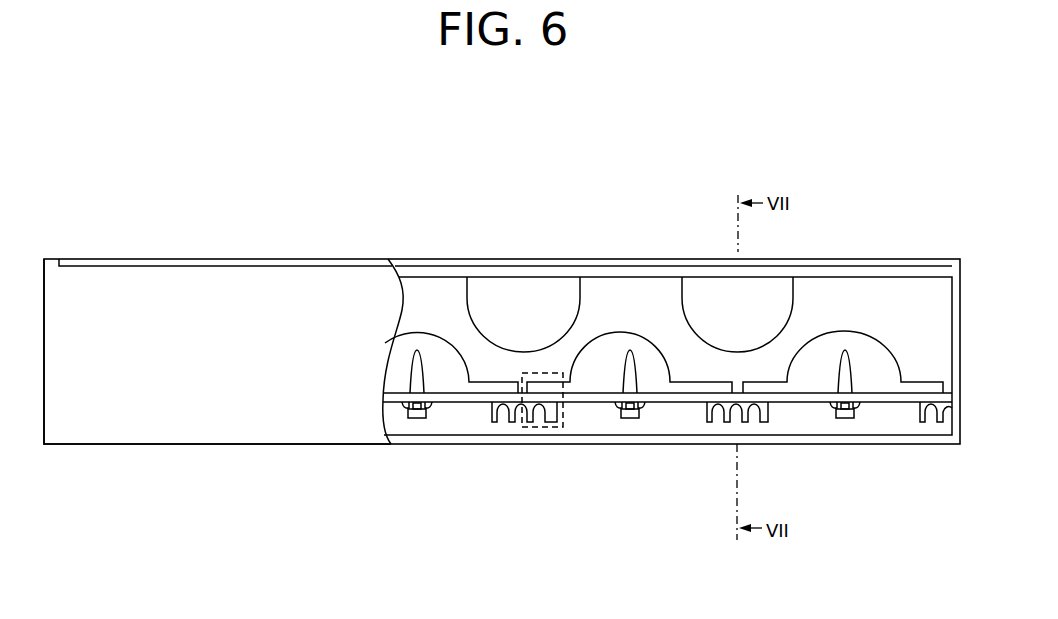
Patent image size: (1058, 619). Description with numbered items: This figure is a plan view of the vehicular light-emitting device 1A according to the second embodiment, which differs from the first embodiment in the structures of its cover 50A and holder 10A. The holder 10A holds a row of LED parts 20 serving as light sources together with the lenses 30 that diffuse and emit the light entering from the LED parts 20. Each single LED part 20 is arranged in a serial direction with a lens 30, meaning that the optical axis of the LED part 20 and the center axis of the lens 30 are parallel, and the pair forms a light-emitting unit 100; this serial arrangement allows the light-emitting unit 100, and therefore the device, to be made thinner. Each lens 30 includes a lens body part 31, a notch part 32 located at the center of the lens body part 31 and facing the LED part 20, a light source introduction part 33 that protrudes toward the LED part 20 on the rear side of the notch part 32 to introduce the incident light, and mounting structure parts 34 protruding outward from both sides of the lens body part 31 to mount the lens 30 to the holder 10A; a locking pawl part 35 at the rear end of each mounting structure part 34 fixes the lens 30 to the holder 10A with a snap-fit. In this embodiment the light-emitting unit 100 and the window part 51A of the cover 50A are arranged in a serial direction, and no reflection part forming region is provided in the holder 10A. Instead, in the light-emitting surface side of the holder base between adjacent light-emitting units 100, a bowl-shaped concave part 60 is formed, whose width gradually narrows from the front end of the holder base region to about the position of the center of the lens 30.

The vehicular light-emitting device 1A is at (161, 142).
The holder 10A is at (922, 348).
The LED part 20 is at (417, 420).
The lens 30 is at (715, 490).
The lens body part 31 is at (667, 380).
The notch part 32 is at (627, 378).
The light source introduction part 33 is at (614, 408).
The mounting structure part 34 is at (567, 425).
The locking pawl part 35 is at (523, 406).
The cover 50A is at (139, 296).
The window part 51A is at (229, 264).
The concave part 60 is at (709, 291).
The light-emitting unit 100 is at (482, 487).